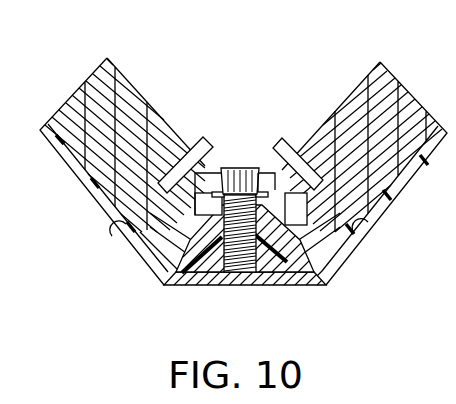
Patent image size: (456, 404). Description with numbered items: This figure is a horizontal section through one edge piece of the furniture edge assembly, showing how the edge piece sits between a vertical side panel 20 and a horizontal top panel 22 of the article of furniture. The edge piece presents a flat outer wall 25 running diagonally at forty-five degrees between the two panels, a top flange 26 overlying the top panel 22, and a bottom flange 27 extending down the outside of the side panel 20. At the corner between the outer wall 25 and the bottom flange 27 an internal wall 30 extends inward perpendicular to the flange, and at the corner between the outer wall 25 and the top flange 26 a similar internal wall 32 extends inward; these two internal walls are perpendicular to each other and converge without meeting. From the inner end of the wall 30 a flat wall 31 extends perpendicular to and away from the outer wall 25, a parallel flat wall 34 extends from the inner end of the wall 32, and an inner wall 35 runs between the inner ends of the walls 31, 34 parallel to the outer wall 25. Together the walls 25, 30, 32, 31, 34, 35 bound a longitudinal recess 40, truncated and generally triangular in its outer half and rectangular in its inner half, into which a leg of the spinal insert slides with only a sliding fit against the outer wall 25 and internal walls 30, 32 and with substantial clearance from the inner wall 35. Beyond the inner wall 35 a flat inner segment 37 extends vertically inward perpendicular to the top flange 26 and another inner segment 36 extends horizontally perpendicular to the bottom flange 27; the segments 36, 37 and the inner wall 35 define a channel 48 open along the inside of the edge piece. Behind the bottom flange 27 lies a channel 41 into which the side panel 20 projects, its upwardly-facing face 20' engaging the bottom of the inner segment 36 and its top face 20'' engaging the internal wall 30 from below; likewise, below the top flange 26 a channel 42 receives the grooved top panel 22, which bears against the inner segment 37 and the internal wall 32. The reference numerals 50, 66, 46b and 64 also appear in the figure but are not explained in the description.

The top panel 22 is at (107, 97).
The inner segment 37 is at (189, 128).
The channel 48 is at (218, 166).
The bolt head 50 is at (239, 167).
The flat wall 34 is at (222, 150).
The inner wall 35 is at (263, 172).
The flat wall 31 is at (266, 192).
The inner segment 36 is at (292, 138).
The upwardly-facing horizontal face 20' is at (349, 149).
The side panel 20 is at (364, 173).
The top flange 26 is at (118, 236).
The channel 42 is at (145, 233).
The internal wall 32 is at (190, 258).
The longitudinal recess 40 is at (207, 268).
The outer wall 25 is at (242, 278).
The internal wall 30 is at (287, 262).
The bottom flange 27 is at (360, 236).
The channel 41 is at (347, 250).
The horizontal top face 20'' is at (345, 290).
The member 66 is at (438, 241).
The member 46b is at (455, 274).
The member 64 is at (455, 299).